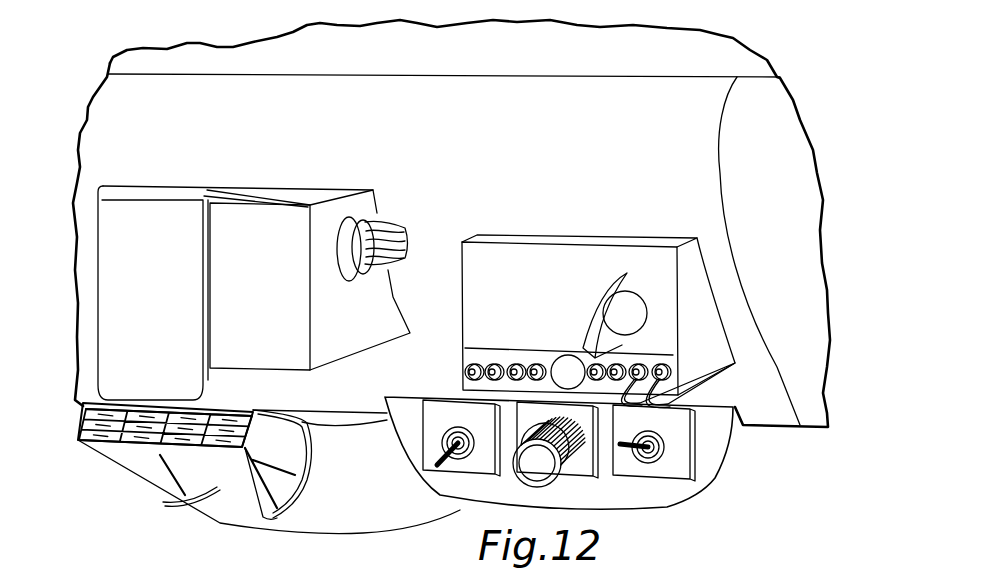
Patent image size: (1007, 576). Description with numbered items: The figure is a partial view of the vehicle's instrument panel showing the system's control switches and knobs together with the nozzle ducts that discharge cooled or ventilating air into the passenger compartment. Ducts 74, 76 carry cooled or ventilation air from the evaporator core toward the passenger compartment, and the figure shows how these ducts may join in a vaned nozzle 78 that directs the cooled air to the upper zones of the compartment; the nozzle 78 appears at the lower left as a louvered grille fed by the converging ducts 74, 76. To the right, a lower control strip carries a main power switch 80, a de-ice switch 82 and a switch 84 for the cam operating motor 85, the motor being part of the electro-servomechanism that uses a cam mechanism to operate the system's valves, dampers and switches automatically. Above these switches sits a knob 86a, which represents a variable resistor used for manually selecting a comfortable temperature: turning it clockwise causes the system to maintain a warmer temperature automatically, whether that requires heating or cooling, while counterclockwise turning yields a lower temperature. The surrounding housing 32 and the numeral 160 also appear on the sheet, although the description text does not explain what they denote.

The housing 32 is at (715, 82).
The knob 86a is at (590, 298).
The main power switch 80 is at (443, 442).
The de-ice switch 82 is at (582, 470).
The switch 84 is at (680, 443).
The vaned nozzle 78 is at (143, 467).
The duct 74 is at (222, 503).
The duct 76 is at (352, 517).
The element 160 is at (695, 567).
The cam operating motor 85 is at (760, 574).